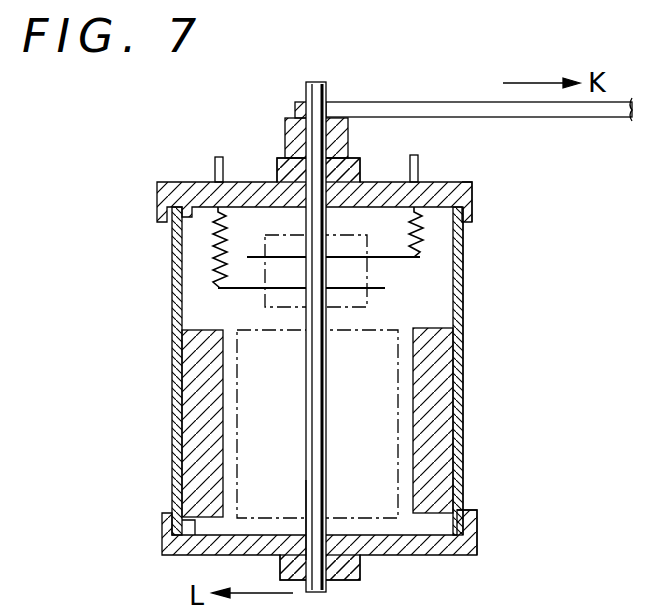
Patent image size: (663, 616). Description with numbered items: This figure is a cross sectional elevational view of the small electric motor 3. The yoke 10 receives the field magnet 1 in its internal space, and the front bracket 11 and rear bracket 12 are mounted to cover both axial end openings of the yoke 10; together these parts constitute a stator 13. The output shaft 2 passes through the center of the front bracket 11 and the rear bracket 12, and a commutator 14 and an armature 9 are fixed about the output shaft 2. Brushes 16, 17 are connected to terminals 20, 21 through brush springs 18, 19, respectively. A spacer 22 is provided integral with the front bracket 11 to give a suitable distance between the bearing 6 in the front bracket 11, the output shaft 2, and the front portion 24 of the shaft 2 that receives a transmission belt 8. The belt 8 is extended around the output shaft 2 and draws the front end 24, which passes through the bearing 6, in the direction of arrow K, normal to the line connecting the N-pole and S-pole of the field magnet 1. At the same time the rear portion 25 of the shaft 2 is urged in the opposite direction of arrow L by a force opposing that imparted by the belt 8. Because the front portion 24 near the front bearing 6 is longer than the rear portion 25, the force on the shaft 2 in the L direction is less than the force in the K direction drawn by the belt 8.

The field magnet 1 is at (200, 417).
The output shaft 2 is at (306, 88).
The small electric motor 3 is at (466, 347).
The bearing 6 is at (342, 172).
The transmission belt 8 is at (555, 118).
The armature 9 is at (398, 452).
The yoke 10 is at (465, 307).
The front bracket 11 is at (190, 192).
The rear bracket 12 is at (192, 556).
The stator 13 is at (466, 394).
The commutator 14 is at (368, 270).
The brush 16 is at (252, 290).
The brush 17 is at (232, 268).
The brush spring 18 is at (215, 234).
The brush spring 19 is at (464, 237).
The terminal 20 is at (216, 156).
The terminal 21 is at (416, 154).
The spacer 22 is at (286, 134).
The front portion of the shaft 24 is at (330, 100).
The rear portion of the shaft 25 is at (328, 492).